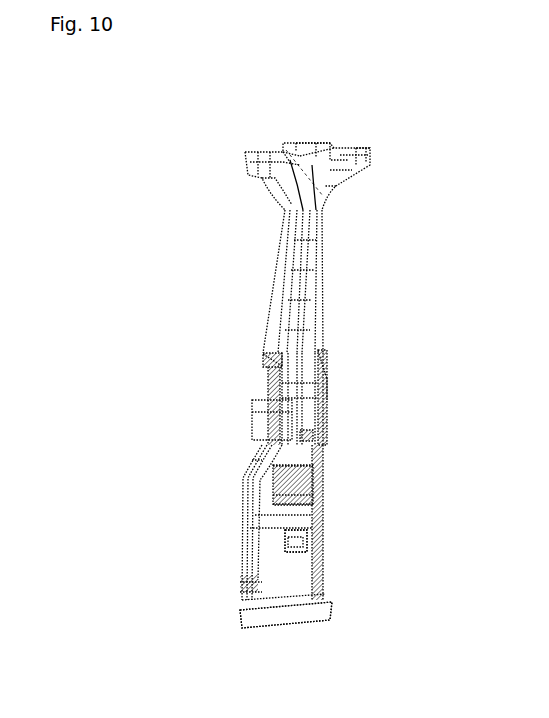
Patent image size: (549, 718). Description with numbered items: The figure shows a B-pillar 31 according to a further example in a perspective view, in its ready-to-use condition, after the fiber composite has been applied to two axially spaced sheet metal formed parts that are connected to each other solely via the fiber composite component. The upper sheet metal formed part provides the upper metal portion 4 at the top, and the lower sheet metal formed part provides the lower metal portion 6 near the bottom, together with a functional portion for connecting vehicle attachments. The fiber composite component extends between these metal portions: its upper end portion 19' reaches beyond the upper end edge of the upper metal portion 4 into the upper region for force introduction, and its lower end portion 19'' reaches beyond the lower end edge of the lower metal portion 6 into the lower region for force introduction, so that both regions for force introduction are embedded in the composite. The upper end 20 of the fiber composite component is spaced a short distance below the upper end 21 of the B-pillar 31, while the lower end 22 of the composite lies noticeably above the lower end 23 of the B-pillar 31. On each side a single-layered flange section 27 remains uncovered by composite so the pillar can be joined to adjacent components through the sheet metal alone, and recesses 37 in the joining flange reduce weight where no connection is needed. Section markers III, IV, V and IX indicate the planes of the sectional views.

The B-pillar 31 is at (215, 210).
The upper end portion 19' is at (252, 124).
The section line III is at (286, 150).
The upper end 21 is at (312, 145).
The upper end 20 is at (305, 163).
The upper metal portion 4 is at (372, 149).
The single-layered flange section 27 is at (265, 355).
The recesses 37 is at (327, 378).
The section line IX is at (252, 412).
The section line V is at (252, 440).
The section line IV is at (246, 467).
The lower end portion 19'' is at (367, 468).
The lower end 22 is at (298, 497).
The lower metal portion 6 is at (324, 547).
The lower end 23 is at (283, 628).